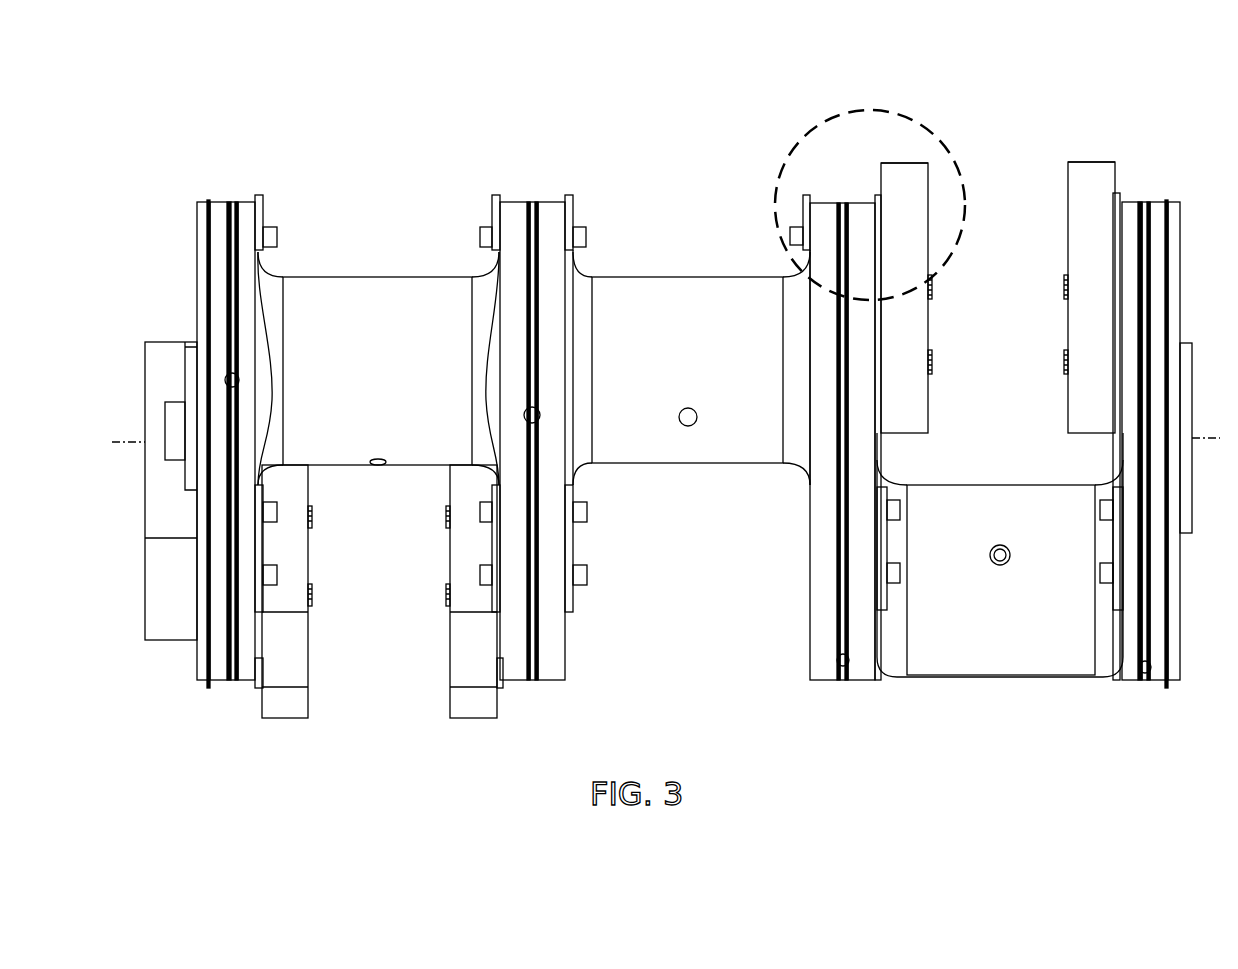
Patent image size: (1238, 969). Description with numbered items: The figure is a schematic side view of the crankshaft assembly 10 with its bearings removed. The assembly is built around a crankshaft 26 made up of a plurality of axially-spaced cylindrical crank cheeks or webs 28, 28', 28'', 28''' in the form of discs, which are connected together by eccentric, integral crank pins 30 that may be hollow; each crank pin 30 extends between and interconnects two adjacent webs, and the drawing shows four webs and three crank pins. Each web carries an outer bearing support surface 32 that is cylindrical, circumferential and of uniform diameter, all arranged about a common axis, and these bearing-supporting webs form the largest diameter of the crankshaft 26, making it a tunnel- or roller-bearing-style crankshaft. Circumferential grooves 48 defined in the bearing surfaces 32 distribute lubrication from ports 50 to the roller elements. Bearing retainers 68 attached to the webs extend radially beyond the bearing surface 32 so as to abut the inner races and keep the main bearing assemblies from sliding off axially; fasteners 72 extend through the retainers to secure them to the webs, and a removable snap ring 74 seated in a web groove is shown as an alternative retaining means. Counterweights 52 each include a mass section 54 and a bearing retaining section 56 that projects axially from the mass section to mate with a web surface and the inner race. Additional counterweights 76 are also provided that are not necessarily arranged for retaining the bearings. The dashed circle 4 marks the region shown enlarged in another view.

The crankshaft assembly 10 is at (617, 82).
The detail region of FIG. 4 is at (948, 133).
The crankshaft 26 is at (170, 305).
The crank web 28 is at (1174, 450).
The crank web 28' is at (200, 457).
The crank web 28'' is at (580, 450).
The crank web 28''' is at (795, 450).
The crank pin 30 is at (395, 277).
The bearing support surface 32 is at (229, 202).
The circumferential groove 48 is at (238, 202).
The port 50 is at (240, 380).
The counterweight 52 is at (283, 720).
The mass section 54 is at (895, 163).
The bearing retaining section 56 is at (878, 195).
The bearing retainer 68 is at (262, 197).
The fastener 72 is at (790, 237).
The snap ring 74 is at (208, 200).
The counterweight 76 is at (147, 615).